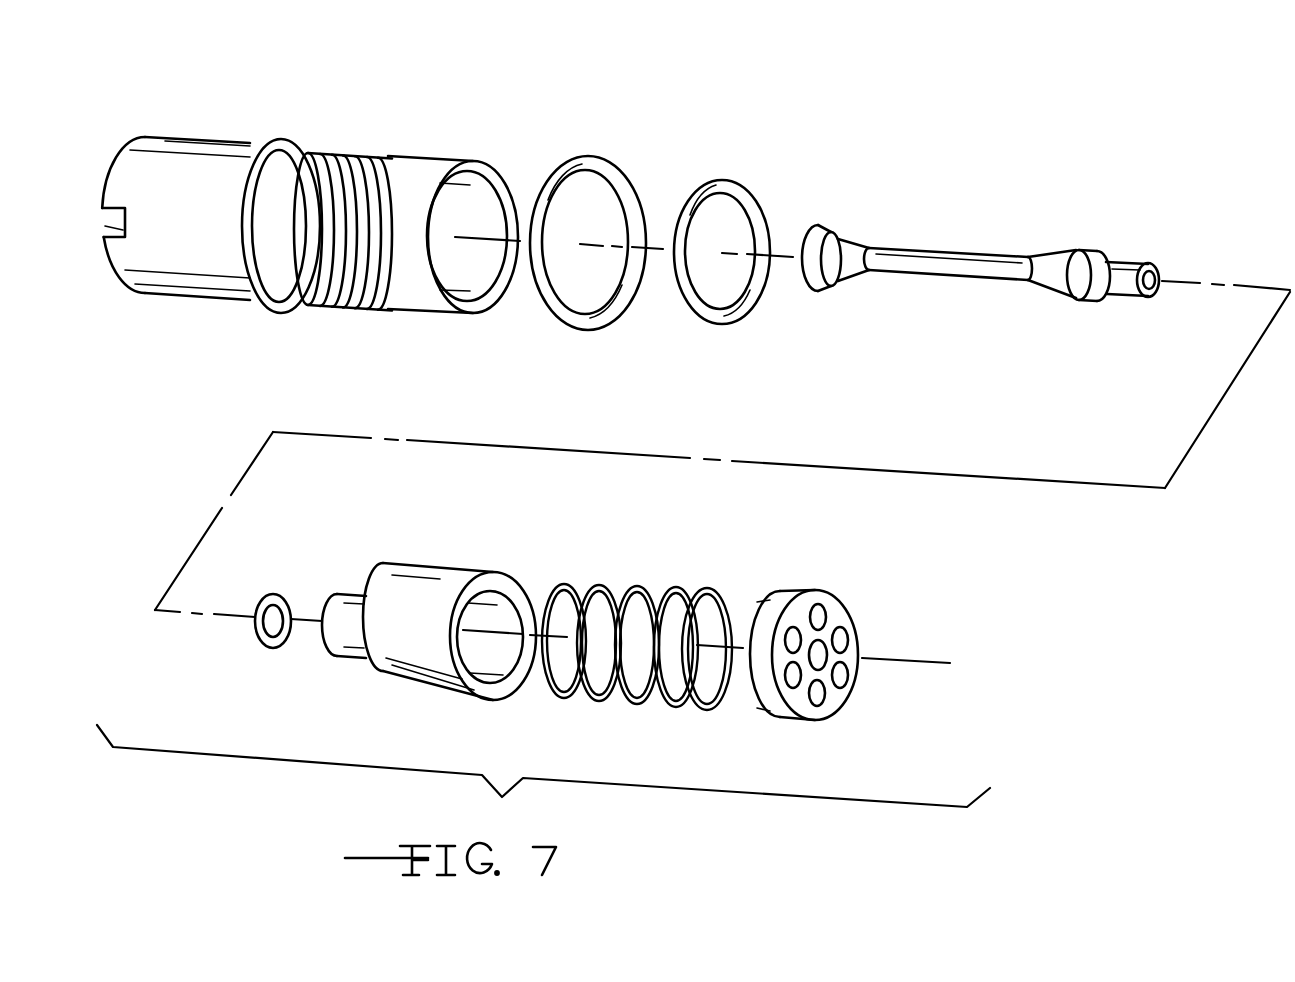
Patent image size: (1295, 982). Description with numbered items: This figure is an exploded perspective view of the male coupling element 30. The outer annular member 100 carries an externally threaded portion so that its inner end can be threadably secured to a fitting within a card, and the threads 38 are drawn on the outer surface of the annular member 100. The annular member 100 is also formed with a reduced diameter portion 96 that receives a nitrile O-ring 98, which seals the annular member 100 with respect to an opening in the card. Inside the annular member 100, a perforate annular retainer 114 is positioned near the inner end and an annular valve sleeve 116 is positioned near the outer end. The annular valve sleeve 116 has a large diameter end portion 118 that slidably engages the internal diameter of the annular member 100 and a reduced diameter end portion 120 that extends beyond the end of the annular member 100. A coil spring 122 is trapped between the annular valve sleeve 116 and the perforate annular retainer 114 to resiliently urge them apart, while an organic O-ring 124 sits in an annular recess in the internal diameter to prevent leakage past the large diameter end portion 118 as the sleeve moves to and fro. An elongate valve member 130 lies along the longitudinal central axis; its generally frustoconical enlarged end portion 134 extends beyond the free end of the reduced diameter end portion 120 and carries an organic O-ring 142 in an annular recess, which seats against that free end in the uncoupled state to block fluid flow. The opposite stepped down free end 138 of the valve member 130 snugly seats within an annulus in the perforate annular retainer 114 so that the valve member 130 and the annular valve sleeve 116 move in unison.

The male coupling element 30 is at (706, 142).
The threaded portion 38 is at (405, 152).
The reduced diameter portion 96 is at (315, 152).
The nitrile O-ring 98 is at (598, 157).
The outer annular member 100 is at (229, 134).
The perforate annular retainer 114 is at (838, 611).
The annular valve sleeve 116 is at (449, 626).
The large diameter end portion 118 is at (431, 698).
The reduced diameter end portion 120 is at (343, 595).
The coil spring 122 is at (648, 589).
The organic O-ring 124 is at (758, 198).
The elongate valve member 130 is at (986, 263).
The frustoconical enlarged end portion 134 is at (852, 282).
The stepped down free end 138 is at (1088, 250).
The organic O-ring 142 is at (273, 651).